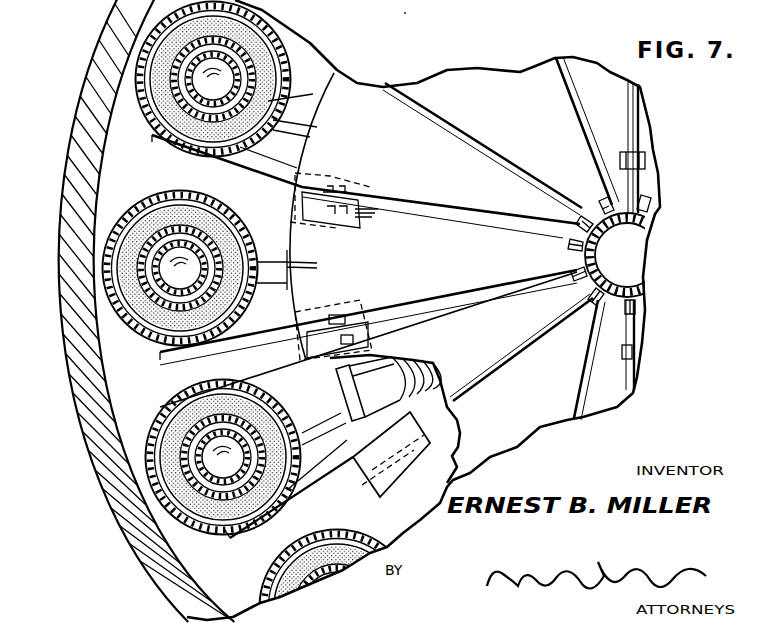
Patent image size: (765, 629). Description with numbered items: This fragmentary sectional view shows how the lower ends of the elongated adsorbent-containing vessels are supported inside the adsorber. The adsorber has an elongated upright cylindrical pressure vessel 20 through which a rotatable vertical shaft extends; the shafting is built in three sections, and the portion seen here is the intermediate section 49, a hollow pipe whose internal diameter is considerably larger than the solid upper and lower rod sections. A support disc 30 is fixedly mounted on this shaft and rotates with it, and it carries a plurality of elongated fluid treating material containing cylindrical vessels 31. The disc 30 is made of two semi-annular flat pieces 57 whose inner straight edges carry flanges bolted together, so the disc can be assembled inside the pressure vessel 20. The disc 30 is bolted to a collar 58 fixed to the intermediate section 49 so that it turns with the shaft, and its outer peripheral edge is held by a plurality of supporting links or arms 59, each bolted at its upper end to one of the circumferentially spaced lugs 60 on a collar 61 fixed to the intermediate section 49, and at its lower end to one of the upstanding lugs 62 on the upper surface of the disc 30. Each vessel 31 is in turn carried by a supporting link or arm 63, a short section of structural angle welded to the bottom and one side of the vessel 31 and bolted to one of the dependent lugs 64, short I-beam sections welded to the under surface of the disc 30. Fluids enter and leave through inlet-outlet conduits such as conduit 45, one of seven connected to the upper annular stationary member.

The pressure vessel 20 is at (88, 80).
The support disc 30 is at (564, 54).
The fluid treating material containing cylindrical vessels 31 is at (151, 24).
The inlet-outlet conduit 45 is at (403, 7).
The intermediate section of the shaft 49 is at (648, 238).
The semi-annular flat pieces 57 is at (528, 117).
The collar 58 is at (650, 205).
The supporting links or arms 59 is at (488, 220).
The circumferentially spaced lugs 60 is at (585, 268).
The collar 61 is at (646, 292).
The upstanding lugs 62 is at (362, 226).
The supporting links or arms 63 is at (217, 159).
The dependent lugs 64 is at (462, 447).